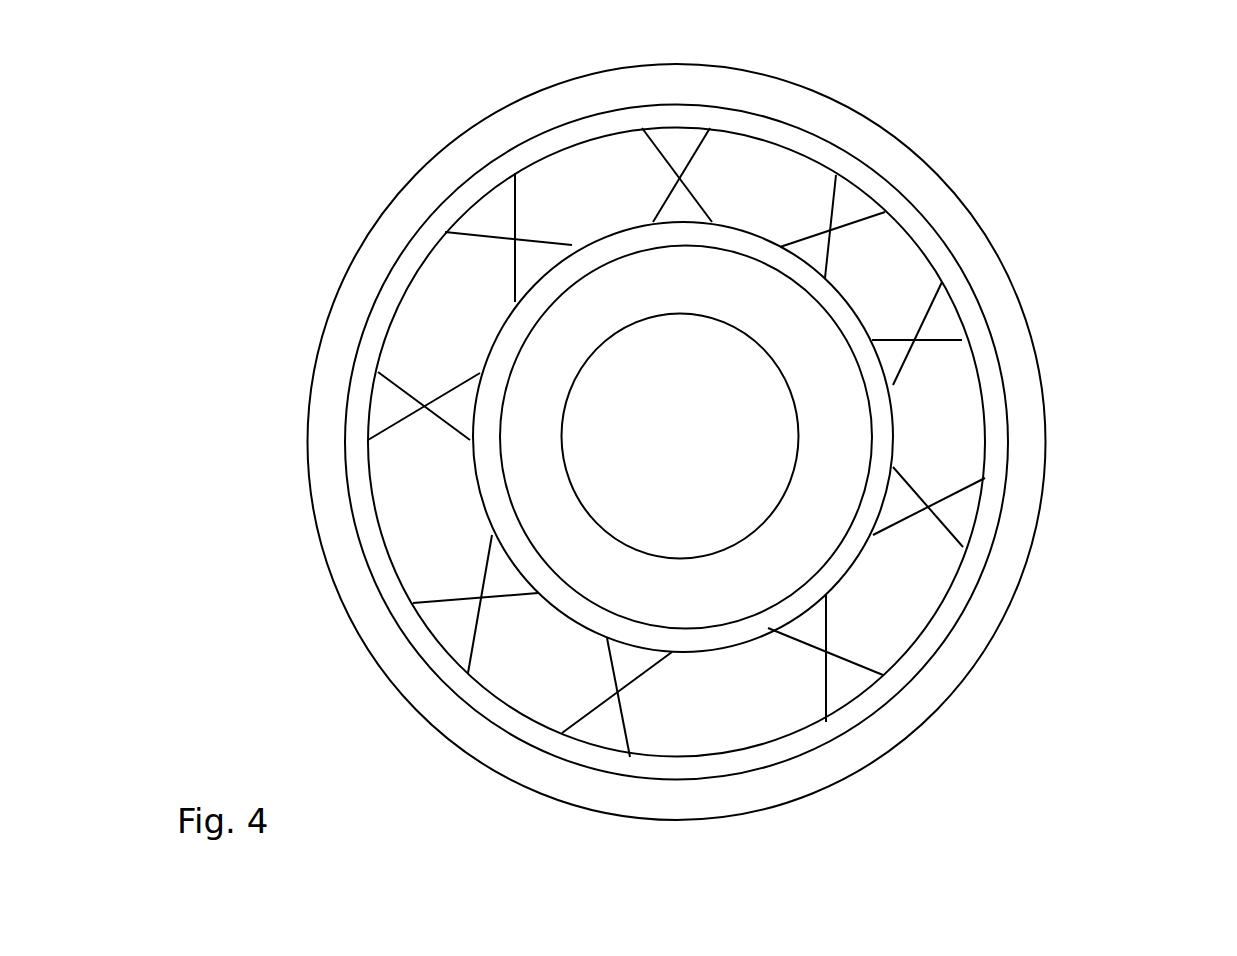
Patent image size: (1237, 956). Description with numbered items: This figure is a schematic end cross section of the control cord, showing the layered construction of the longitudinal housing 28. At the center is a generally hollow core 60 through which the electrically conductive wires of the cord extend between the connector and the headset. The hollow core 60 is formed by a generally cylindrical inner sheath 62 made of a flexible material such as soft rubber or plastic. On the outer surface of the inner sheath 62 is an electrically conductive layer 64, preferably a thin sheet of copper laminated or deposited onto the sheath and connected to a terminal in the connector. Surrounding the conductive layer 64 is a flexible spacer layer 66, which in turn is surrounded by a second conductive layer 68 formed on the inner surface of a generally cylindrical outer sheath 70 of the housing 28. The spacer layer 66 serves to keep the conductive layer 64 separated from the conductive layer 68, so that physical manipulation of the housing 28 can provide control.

The longitudinal housing 28 is at (1084, 681).
The hollow core 60 is at (680, 436).
The inner sheath 62 is at (539, 437).
The conductive layer 64 is at (547, 437).
The spacer layer 66 is at (705, 405).
The conductive layer 68 is at (743, 442).
The outer sheath 70 is at (677, 427).